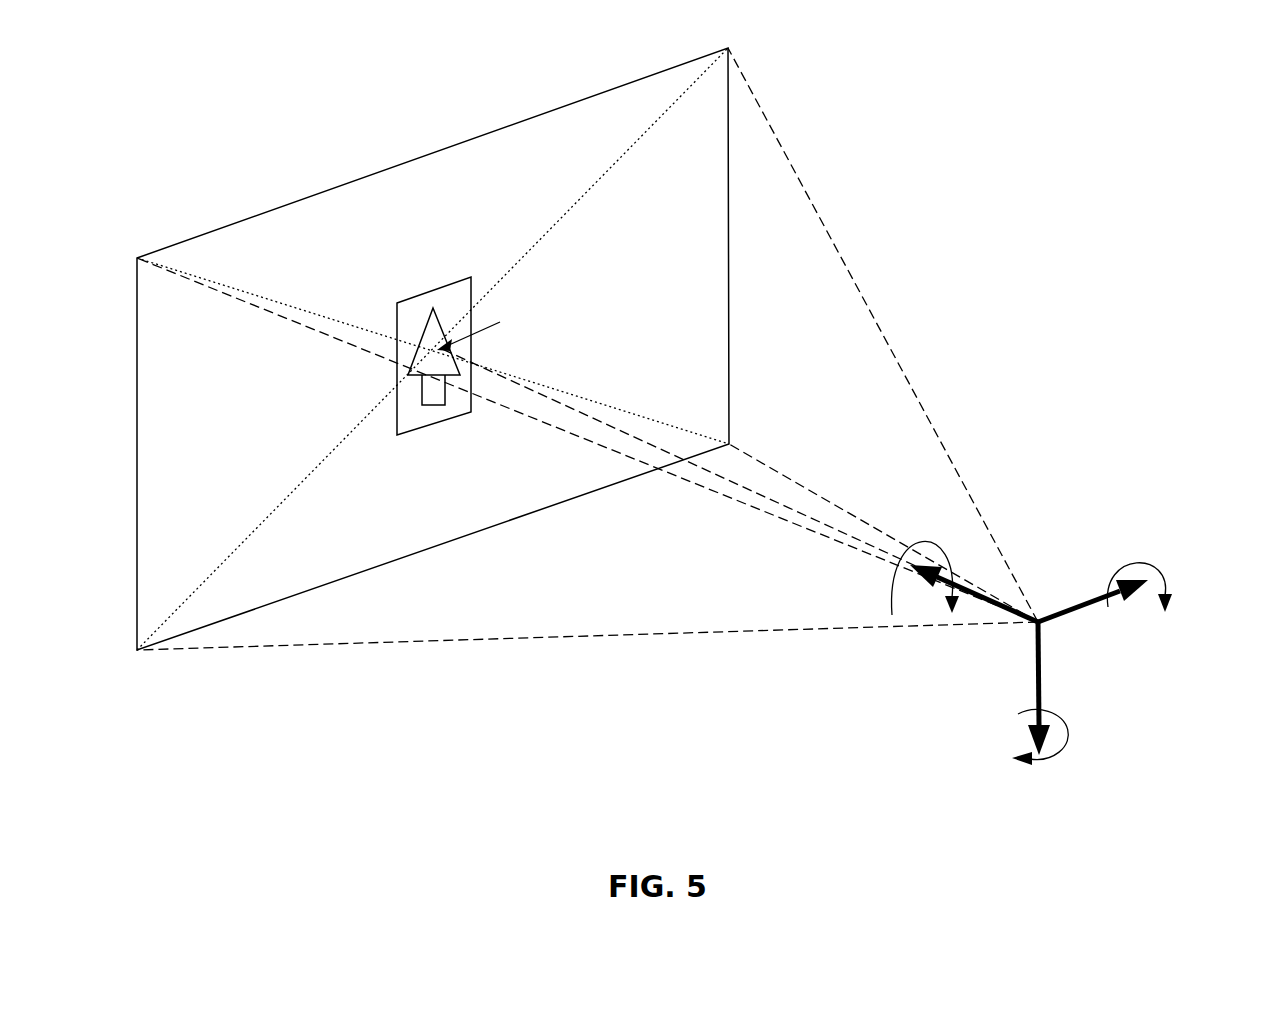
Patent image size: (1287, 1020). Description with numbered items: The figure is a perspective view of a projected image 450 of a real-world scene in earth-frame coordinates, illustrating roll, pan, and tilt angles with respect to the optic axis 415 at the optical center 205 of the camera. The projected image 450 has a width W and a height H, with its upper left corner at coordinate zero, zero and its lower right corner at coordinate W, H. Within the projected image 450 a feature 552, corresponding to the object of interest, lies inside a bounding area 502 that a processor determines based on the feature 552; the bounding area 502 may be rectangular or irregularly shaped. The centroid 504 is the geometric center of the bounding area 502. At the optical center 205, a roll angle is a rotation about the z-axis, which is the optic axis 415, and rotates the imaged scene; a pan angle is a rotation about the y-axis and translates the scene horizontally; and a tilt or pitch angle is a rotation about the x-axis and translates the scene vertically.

The projected image 450 is at (677, 70).
The bounding area 502 is at (437, 285).
The feature 552 is at (433, 318).
The centroid 504 is at (435, 352).
The optic axis 415 is at (750, 488).
The optical center 205 is at (1047, 625).